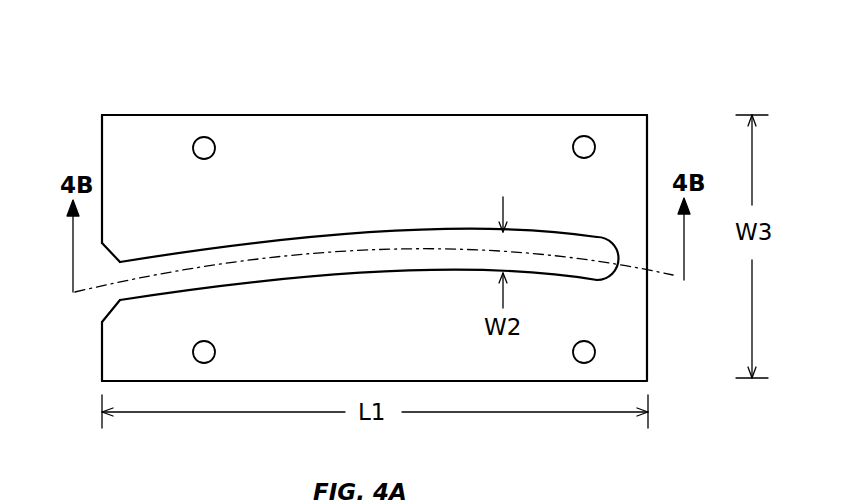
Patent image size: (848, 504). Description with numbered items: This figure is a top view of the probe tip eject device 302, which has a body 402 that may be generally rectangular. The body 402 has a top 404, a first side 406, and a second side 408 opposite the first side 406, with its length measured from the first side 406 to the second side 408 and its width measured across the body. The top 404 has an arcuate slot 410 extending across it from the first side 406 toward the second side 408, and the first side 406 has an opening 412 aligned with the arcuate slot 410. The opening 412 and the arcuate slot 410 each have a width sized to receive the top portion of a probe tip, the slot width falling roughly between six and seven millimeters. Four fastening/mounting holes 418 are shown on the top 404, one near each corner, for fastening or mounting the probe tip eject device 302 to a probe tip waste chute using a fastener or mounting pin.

The probe tip eject device 302 is at (372, 197).
The body 402 is at (649, 114).
The top 404 is at (372, 138).
The first side 406 is at (102, 150).
The second side 408 is at (647, 312).
The arcuate slot 410 is at (370, 228).
The opening 412 is at (90, 308).
The fastening/mounting holes 418 is at (215, 153).